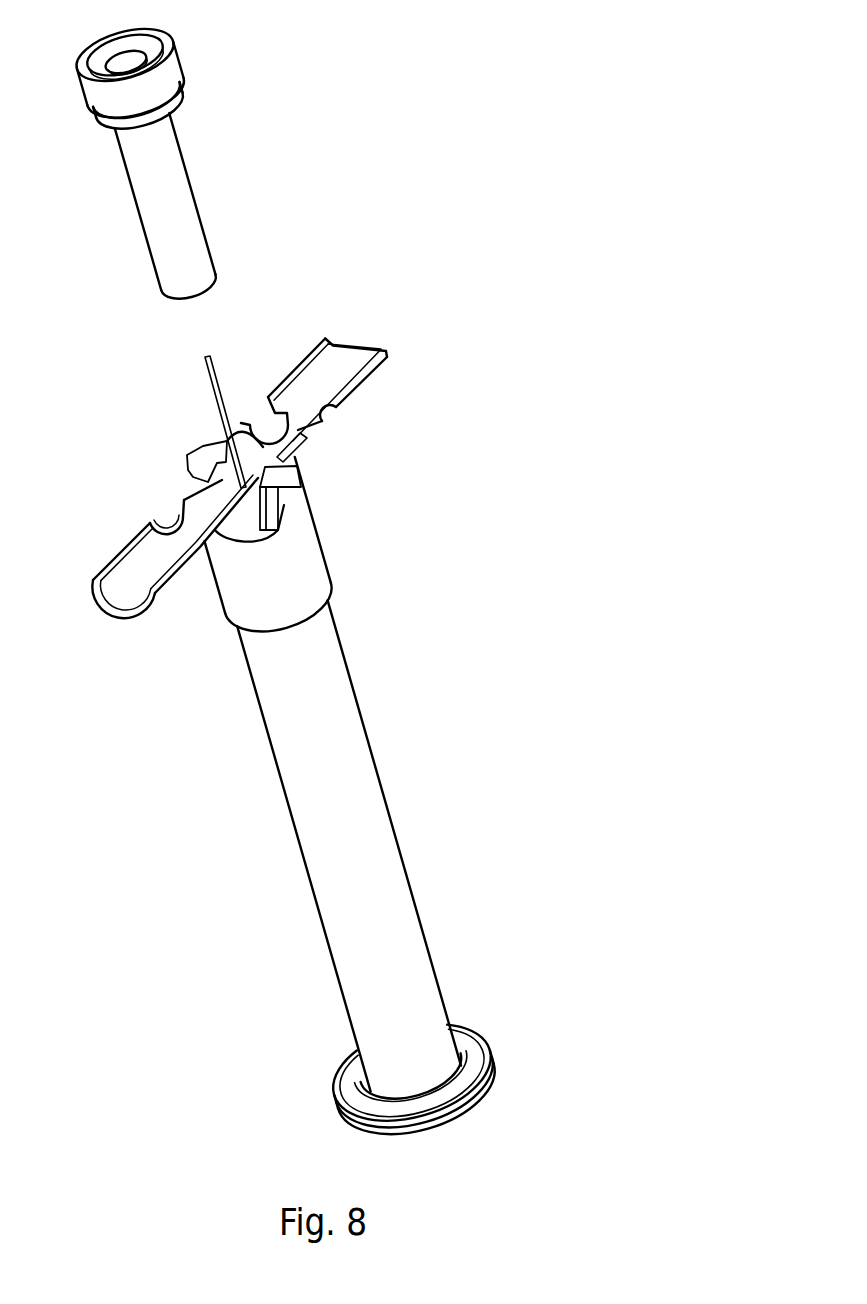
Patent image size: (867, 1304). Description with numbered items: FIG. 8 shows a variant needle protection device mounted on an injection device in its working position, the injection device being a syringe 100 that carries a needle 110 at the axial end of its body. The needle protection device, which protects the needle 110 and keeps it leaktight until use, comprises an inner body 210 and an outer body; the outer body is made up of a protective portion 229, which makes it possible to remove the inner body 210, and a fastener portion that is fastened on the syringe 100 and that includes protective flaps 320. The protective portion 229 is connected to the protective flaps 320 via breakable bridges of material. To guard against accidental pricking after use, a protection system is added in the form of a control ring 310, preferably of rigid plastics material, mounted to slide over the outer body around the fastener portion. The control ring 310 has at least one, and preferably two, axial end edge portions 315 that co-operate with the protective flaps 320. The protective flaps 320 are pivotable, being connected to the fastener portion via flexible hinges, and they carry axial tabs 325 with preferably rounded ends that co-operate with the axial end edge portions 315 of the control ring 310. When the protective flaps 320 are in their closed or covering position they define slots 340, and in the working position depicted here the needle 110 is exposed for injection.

The syringe 100 is at (392, 811).
The needle 110 is at (200, 382).
The inner body 210 is at (200, 225).
The protective portion 229 is at (185, 60).
The control ring 310 is at (305, 558).
The axial end edge portions 315 is at (296, 477).
The protective flaps 320 is at (332, 378).
The axial tabs 325 is at (206, 435).
The slots 340 is at (159, 508).